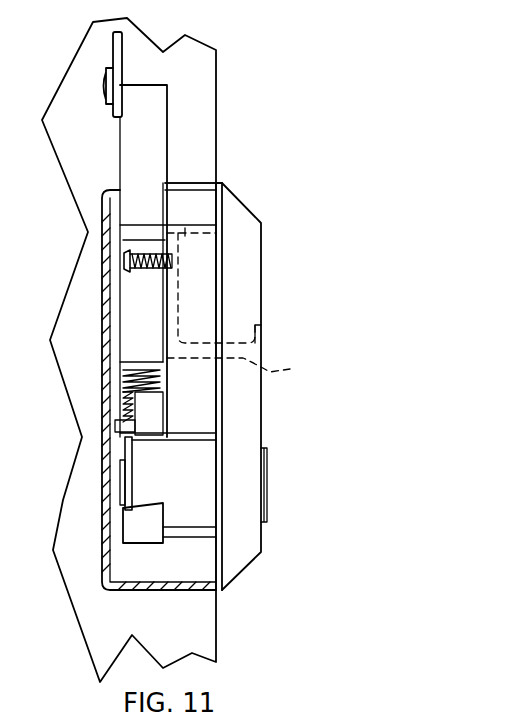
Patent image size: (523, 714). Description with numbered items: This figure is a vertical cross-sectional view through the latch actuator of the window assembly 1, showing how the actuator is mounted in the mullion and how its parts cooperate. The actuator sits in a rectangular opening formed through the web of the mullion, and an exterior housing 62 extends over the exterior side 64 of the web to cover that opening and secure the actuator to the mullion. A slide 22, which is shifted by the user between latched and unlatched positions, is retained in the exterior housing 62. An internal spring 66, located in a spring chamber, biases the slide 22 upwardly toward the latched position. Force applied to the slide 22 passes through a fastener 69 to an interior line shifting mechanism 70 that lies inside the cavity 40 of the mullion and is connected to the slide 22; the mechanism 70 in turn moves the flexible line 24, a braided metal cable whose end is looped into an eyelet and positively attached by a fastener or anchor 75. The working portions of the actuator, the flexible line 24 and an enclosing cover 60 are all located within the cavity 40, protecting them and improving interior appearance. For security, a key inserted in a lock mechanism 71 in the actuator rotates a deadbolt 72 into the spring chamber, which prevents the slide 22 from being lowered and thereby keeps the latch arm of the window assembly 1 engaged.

The window assembly 1 is at (231, 42).
The slide 22 is at (243, 300).
The flexible line 24 is at (118, 45).
The cavity 40 is at (114, 366).
The cover 60 is at (110, 330).
The exterior housing 62 is at (253, 267).
The exterior side 64 is at (222, 181).
The internal spring 66 is at (127, 382).
The fastener 69 is at (134, 246).
The interior line shifting mechanism 70 is at (152, 132).
The lock mechanism 71 is at (124, 488).
The deadbolt 72 is at (137, 533).
The fasteners or anchors 75 is at (103, 84).